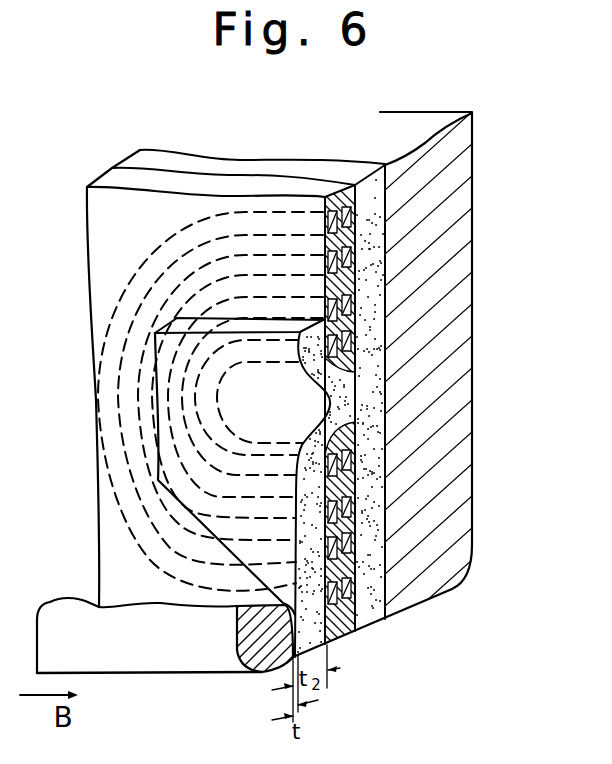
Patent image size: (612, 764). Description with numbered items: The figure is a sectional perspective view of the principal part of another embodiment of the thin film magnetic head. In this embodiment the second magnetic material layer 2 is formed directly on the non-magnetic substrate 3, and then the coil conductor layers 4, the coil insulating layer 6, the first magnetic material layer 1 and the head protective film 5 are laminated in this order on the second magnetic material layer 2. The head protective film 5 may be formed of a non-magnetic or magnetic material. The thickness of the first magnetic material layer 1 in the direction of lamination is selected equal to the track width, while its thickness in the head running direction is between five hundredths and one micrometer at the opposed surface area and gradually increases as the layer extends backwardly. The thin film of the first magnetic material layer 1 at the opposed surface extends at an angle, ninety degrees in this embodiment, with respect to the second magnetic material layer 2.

The first magnetic material layer 1 is at (347, 631).
The second magnetic material layer 2 is at (368, 604).
The non-magnetic substrate 3 is at (458, 572).
The coil conductor layers 4 is at (355, 453).
The head protective film 5 is at (247, 671).
The coil insulating layer 6 is at (362, 636).